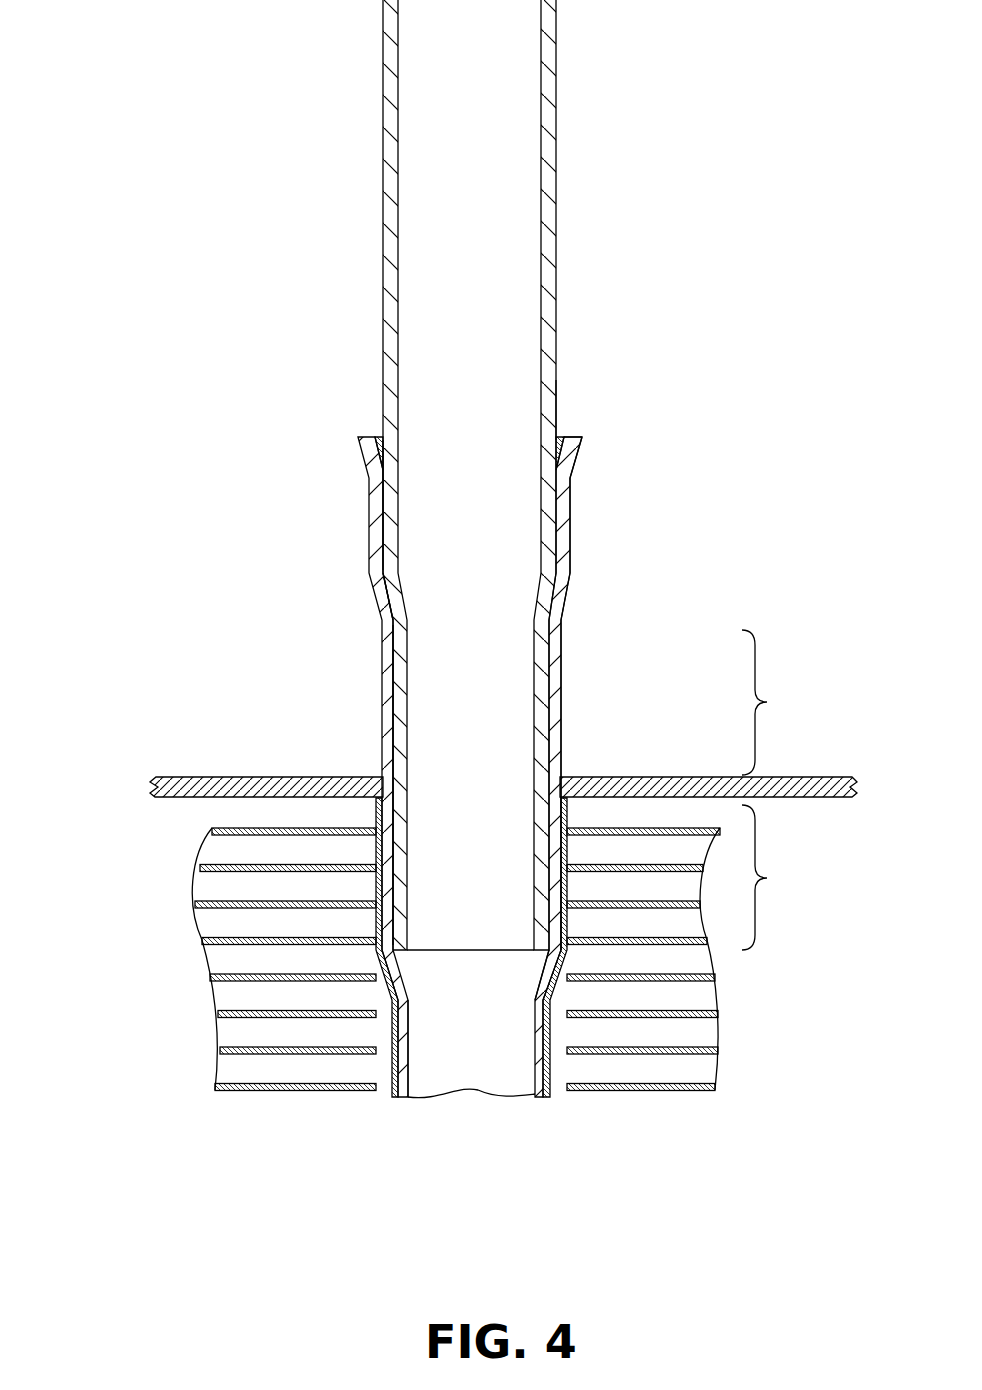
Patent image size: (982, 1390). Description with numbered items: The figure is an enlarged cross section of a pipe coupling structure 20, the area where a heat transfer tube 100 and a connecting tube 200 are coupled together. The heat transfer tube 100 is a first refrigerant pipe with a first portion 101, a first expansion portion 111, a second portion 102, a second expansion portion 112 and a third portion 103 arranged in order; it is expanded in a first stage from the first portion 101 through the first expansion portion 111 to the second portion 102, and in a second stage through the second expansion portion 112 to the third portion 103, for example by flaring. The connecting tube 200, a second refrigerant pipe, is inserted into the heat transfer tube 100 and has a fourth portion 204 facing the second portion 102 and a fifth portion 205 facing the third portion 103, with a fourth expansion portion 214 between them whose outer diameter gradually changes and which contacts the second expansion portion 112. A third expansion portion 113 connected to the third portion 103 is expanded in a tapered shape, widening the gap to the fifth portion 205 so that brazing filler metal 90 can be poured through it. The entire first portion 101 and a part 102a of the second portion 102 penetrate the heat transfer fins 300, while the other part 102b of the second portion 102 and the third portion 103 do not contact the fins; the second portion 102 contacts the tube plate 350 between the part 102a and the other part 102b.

The connecting tube 200 is at (557, 157).
The heat transfer tube 100 is at (383, 688).
The pipe coupling structure 20 is at (656, 390).
The brazing filler metal 90 is at (558, 437).
The fifth portion 205 is at (400, 512).
The fourth expansion portion 214 is at (407, 600).
The fourth portion 204 is at (408, 812).
The third expansion portion 113 is at (574, 459).
The third portion 103 is at (573, 526).
The second expansion portion 112 is at (567, 600).
The second portion 102 is at (562, 705).
The other part of the second portion 102b is at (801, 702).
The part of the second portion 102a is at (801, 877).
The first portion 101 is at (410, 1054).
The first expansion portion 111 is at (538, 979).
The tube plate 350 is at (205, 777).
The heat transfer fins 300 is at (212, 829).